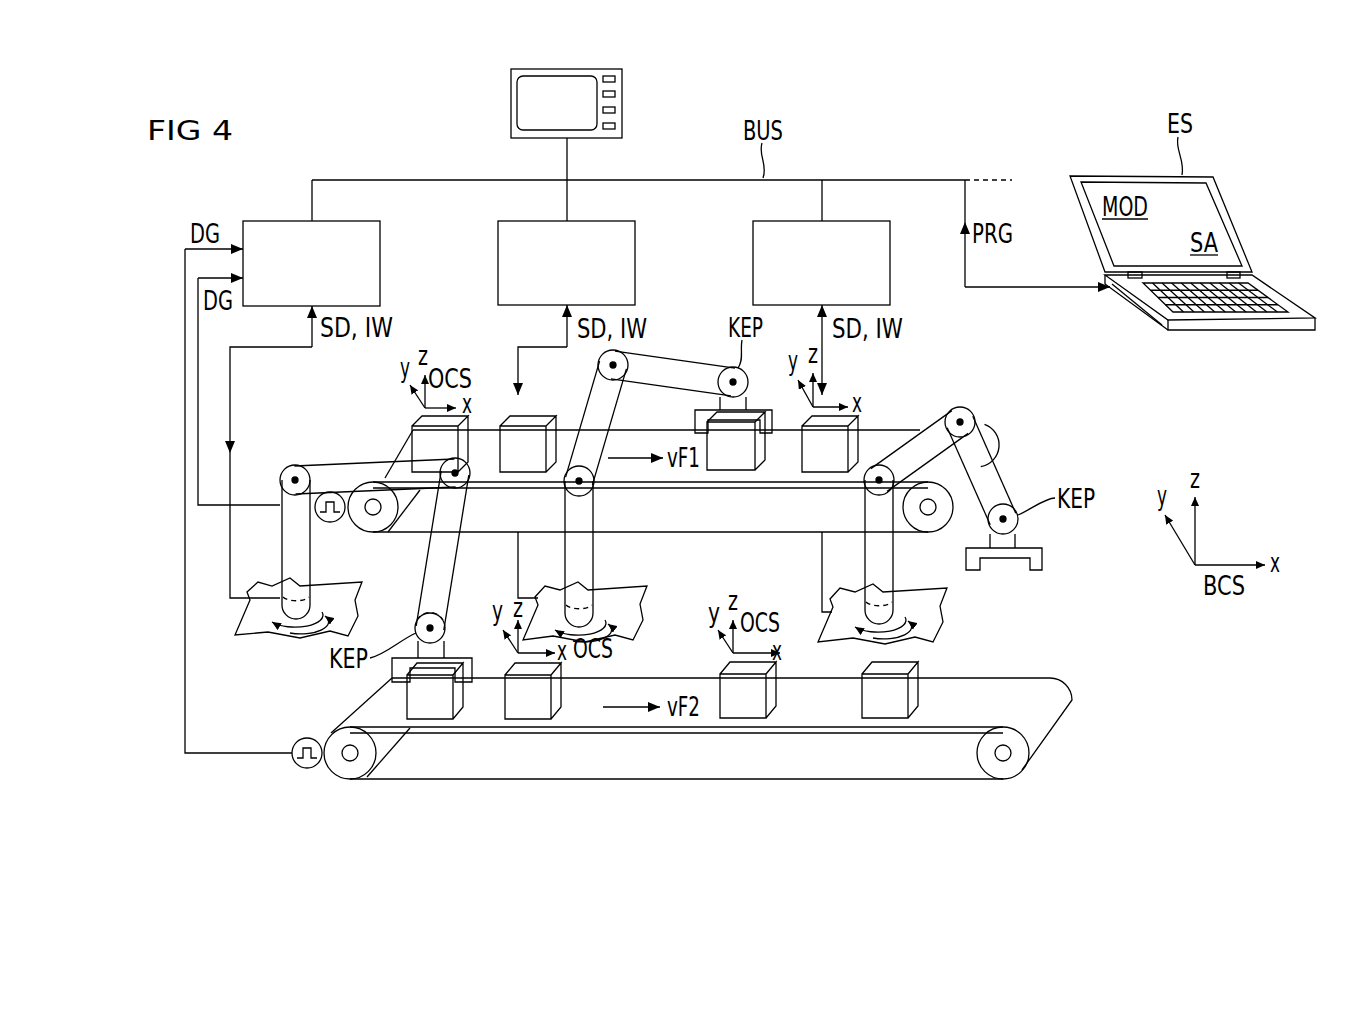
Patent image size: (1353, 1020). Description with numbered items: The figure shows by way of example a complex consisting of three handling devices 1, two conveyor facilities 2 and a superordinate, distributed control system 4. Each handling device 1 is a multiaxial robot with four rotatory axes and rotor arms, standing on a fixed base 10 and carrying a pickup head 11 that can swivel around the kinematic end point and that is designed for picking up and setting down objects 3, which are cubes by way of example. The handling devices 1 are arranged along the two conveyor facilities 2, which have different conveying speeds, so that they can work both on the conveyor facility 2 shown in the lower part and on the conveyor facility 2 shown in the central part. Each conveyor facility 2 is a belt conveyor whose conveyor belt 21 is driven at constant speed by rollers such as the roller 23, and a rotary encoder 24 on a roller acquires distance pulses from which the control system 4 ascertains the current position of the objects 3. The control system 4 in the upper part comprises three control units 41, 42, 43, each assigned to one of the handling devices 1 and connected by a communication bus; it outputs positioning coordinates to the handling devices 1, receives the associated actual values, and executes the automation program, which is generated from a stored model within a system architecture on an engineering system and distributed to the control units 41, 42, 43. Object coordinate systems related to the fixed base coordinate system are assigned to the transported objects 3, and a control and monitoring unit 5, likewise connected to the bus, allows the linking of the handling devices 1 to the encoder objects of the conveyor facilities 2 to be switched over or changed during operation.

The handling device 1 is at (681, 479).
The conveyor facility 2 is at (731, 720).
The object 3 is at (522, 462).
The control system 4 is at (600, 243).
The control unit 41 is at (380, 243).
The control unit 42 is at (635, 243).
The control unit 43 is at (890, 243).
The control and monitoring unit 5 is at (622, 100).
The fixed base 10 is at (260, 630).
The pickup head 11 is at (456, 658).
The conveyor belt 21 is at (1020, 702).
The roller 23 is at (1000, 761).
The rotary encoder 24 is at (336, 521).